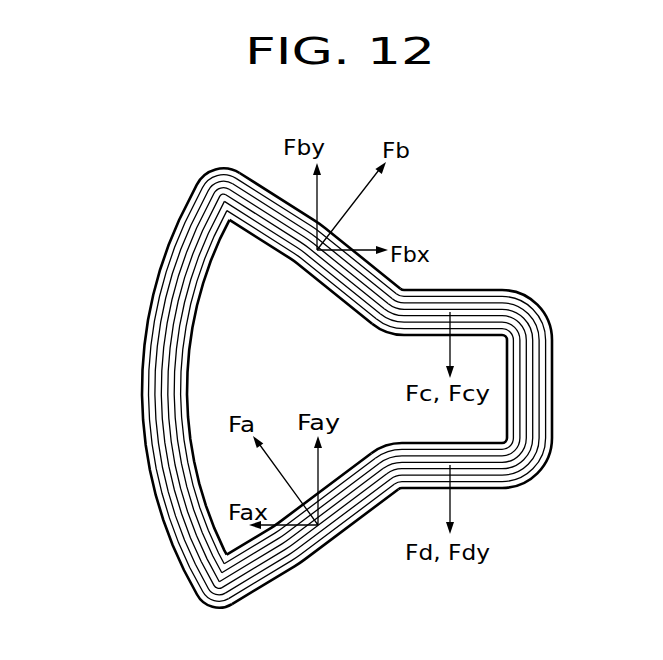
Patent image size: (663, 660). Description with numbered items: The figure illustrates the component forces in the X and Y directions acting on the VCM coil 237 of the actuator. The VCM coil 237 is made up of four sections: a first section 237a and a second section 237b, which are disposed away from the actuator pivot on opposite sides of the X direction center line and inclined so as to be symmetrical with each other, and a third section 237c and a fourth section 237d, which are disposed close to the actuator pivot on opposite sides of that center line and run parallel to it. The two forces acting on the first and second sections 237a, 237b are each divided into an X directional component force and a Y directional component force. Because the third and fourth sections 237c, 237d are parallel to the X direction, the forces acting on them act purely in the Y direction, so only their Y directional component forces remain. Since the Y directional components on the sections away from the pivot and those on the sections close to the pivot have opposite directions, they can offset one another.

The VCM coil 237 is at (122, 493).
The first section 237a is at (293, 560).
The second section 237b is at (274, 198).
The third section 237c is at (482, 311).
The fourth section 237d is at (491, 481).